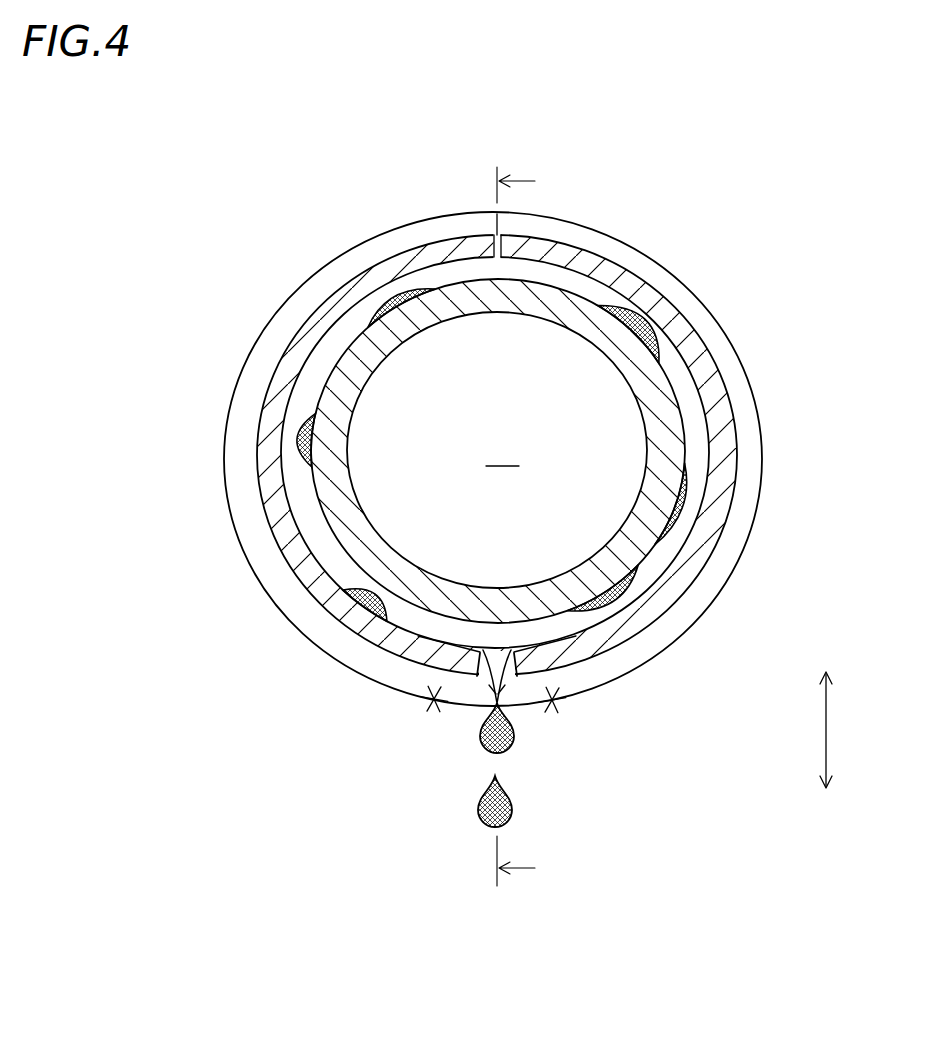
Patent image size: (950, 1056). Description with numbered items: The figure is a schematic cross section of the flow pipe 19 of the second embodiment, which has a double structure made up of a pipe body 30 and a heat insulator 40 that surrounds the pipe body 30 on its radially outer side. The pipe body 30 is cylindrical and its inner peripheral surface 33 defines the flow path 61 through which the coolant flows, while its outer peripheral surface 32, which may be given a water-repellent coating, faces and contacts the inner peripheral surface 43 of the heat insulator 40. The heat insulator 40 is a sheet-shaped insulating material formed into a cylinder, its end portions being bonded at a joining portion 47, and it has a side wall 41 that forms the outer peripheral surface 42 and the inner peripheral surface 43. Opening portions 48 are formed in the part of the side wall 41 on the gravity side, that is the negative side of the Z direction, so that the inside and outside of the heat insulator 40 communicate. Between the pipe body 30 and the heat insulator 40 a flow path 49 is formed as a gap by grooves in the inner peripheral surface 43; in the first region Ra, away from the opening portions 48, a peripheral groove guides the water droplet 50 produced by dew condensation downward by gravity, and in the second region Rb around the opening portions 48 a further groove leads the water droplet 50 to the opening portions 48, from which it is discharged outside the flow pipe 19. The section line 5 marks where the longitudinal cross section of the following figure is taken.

The flow pipe 19 is at (710, 248).
The pipe body 30 is at (586, 400).
The outer peripheral surface 32 is at (586, 451).
The inner peripheral surface 33 is at (520, 309).
The heat insulator 40 is at (556, 437).
The side wall 41 is at (718, 500).
The outer peripheral surface 42 is at (733, 395).
The inner peripheral surface 43 is at (700, 431).
The joining portion 47 is at (494, 214).
The opening portions 48 is at (508, 655).
The flow path 49 is at (707, 381).
The water droplet 50 is at (297, 442).
The flow path 61 is at (502, 454).
The section line 5- 5 is at (526, 526).
The first region Ra is at (763, 462).
The second region Rb is at (464, 703).
The Z direction Z is at (832, 730).